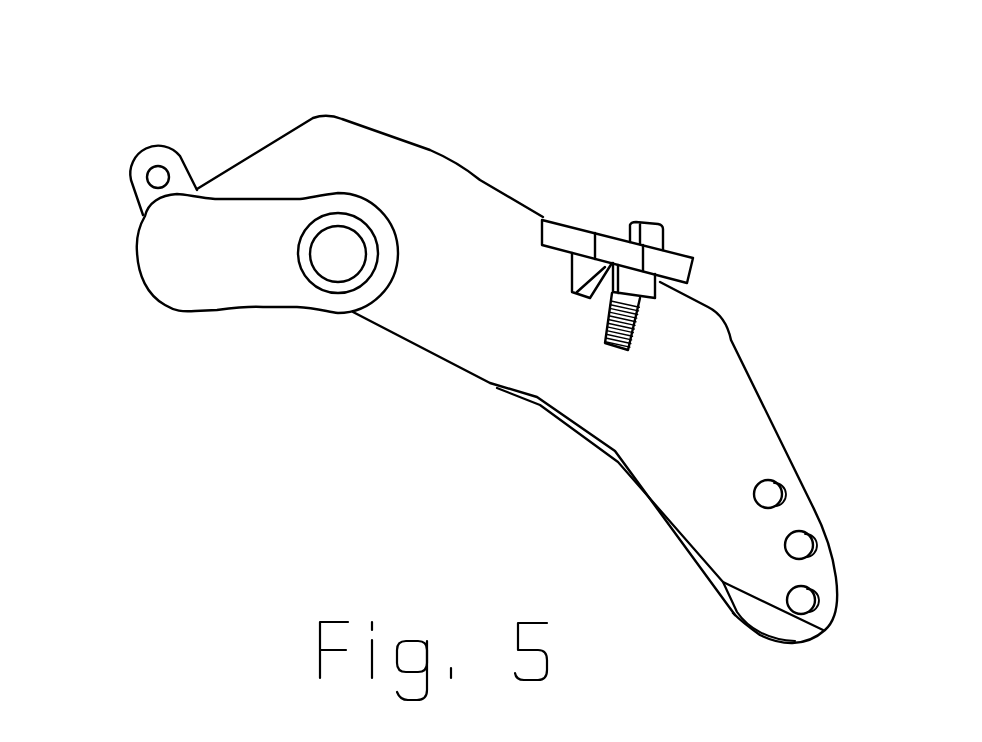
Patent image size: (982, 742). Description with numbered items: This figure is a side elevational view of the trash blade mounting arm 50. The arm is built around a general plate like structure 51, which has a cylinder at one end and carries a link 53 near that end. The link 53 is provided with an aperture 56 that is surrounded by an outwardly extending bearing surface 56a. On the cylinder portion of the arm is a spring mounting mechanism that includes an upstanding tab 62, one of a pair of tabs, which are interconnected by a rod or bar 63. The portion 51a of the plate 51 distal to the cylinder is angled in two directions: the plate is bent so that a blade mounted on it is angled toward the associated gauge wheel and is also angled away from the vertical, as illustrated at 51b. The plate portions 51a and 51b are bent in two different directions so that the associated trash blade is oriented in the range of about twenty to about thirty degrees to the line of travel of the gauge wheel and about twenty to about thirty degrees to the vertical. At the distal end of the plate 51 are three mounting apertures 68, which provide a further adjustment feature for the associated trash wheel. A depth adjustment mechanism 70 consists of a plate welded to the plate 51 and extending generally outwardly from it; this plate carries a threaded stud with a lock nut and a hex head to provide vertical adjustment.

The trash blade mounting arm 50 is at (803, 142).
The plate like structure 51 is at (774, 365).
The portion of the plate distal to the cylinder 51a is at (480, 180).
The plate portion angled away from the vertical 51b is at (672, 526).
The link 53 is at (231, 269).
The aperture 56 is at (349, 239).
The bearing surface 56a is at (318, 280).
The upstanding tab 62 is at (180, 157).
The rod or bar 63 is at (153, 178).
The mounting apertures 68 is at (783, 503).
The depth adjustment mechanism 70 is at (697, 249).